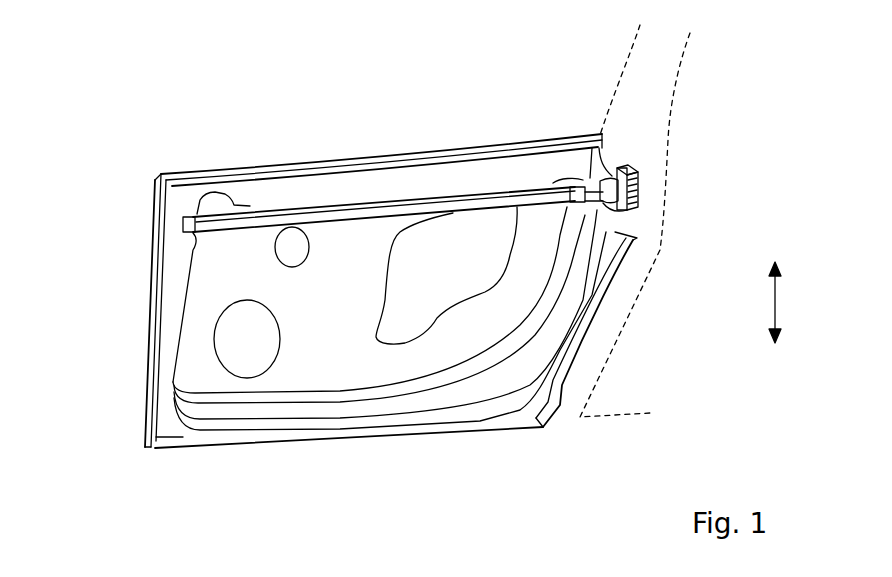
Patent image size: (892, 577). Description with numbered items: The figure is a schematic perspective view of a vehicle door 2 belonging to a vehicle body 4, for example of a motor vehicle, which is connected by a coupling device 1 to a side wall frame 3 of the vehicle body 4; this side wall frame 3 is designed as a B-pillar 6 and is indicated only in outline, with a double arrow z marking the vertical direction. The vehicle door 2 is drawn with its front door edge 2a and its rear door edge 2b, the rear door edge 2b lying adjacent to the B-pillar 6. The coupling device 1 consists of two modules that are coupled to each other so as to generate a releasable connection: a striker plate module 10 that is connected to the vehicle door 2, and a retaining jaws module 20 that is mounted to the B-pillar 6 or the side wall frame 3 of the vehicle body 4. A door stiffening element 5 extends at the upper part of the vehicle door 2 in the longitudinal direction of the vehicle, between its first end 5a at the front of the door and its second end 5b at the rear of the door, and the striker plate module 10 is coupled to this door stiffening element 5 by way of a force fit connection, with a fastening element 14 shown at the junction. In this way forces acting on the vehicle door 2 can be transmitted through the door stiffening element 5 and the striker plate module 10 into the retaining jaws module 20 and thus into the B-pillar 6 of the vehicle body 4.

The coupling device 1 is at (680, 180).
The vehicle door 2 is at (297, 135).
The front door edge 2a is at (155, 316).
The rear door edge 2b is at (603, 302).
The side wall frame 3 is at (712, 97).
The vehicle body 4 is at (210, 100).
The door stiffening element 5 is at (469, 190).
The first rail end 5a is at (185, 224).
The second rail end 5b is at (581, 186).
The B-pillar 6 is at (615, 53).
The striker plate module 10 is at (640, 188).
The fastening element 14 is at (613, 200).
The retaining jaws module 20 is at (640, 170).
The vertical direction z is at (777, 300).